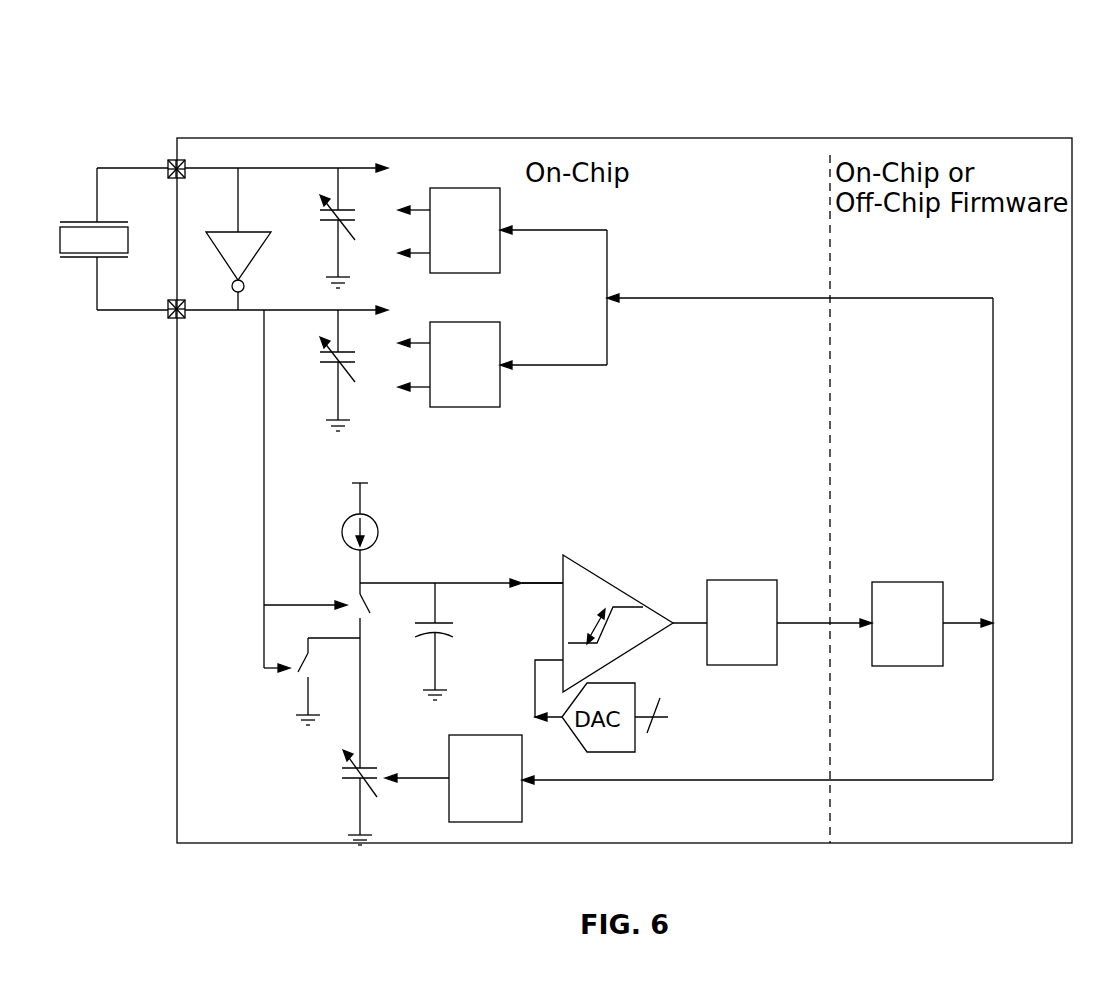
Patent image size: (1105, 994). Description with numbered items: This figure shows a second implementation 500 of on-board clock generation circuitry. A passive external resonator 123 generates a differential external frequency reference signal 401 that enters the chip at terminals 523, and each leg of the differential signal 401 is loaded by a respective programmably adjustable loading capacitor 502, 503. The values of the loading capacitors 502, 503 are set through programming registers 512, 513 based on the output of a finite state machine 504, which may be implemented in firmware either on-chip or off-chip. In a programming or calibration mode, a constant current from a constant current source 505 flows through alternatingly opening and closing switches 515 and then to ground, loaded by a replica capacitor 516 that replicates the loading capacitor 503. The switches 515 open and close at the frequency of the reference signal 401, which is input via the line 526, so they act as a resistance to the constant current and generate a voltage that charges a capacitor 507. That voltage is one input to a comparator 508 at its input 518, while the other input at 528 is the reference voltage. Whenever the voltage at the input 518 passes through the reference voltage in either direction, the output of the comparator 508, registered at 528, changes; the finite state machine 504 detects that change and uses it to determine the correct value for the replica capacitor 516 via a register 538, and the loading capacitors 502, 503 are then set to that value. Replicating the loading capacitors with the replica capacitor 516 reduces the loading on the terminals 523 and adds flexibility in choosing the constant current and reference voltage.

The second implementation of on-board clock generation circuitry 500 is at (87, 47).
The terminals 523 is at (169, 160).
The external frequency reference signal 401 is at (128, 170).
The passive external resonator 123 is at (68, 259).
The programmably adjustable loading capacitor 502 is at (348, 213).
The programmably adjustable loading capacitor 503 is at (348, 352).
The programming register 512 is at (489, 275).
The programming register 513 is at (467, 322).
The input 526 is at (264, 563).
The constant current source 505 is at (372, 515).
The alternatingly opening and closing switches 515 is at (356, 602).
The capacitor 507 is at (447, 619).
The comparator 508 is at (590, 570).
The comparator input 518 is at (560, 583).
The comparator input / registered output 528 is at (737, 580).
The finite state machine 504 is at (907, 582).
The replica capacitor 516 is at (373, 765).
The register 538 is at (487, 735).